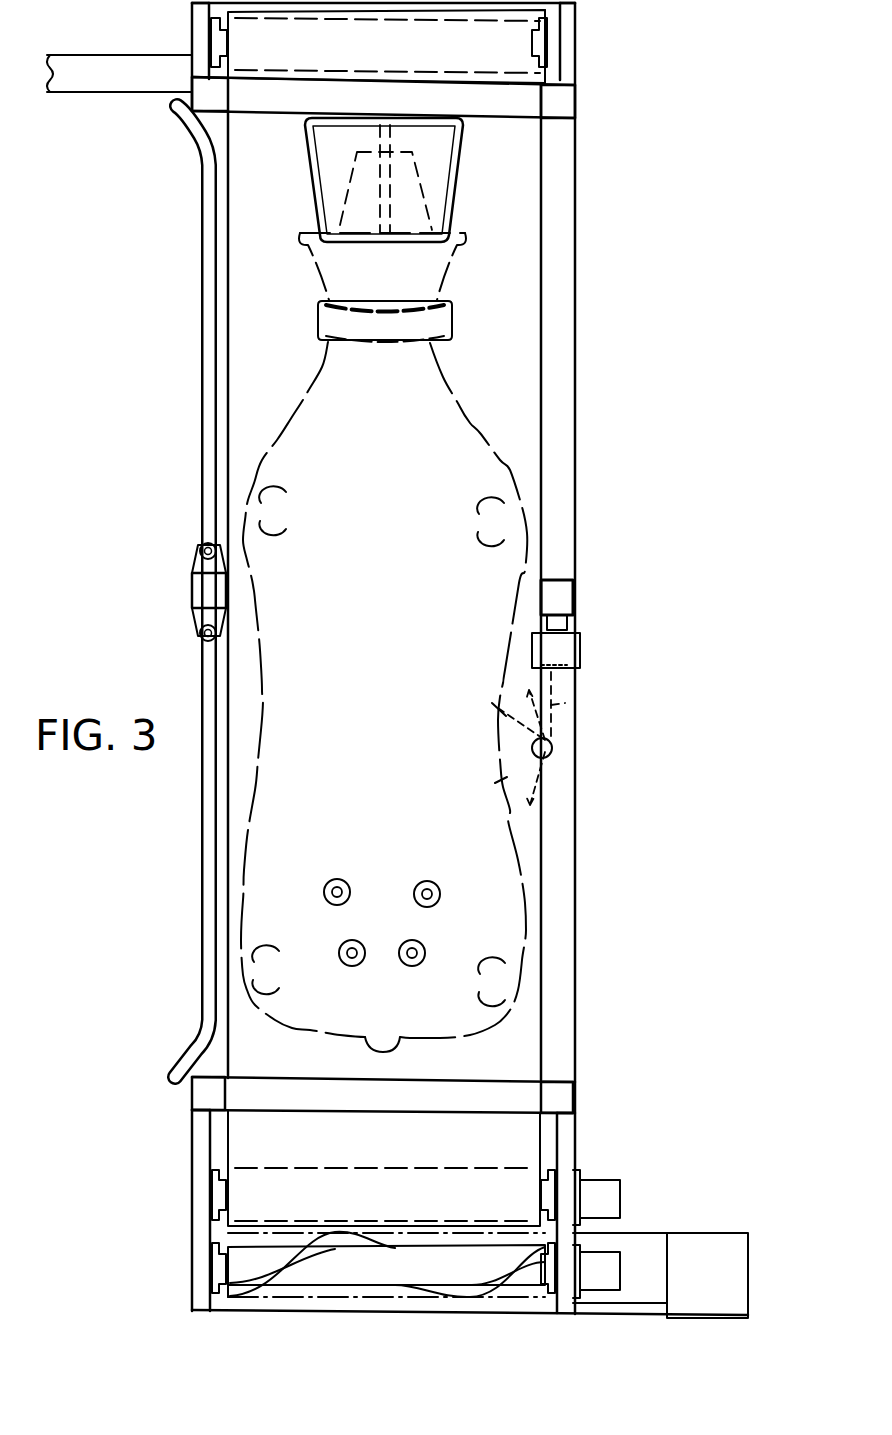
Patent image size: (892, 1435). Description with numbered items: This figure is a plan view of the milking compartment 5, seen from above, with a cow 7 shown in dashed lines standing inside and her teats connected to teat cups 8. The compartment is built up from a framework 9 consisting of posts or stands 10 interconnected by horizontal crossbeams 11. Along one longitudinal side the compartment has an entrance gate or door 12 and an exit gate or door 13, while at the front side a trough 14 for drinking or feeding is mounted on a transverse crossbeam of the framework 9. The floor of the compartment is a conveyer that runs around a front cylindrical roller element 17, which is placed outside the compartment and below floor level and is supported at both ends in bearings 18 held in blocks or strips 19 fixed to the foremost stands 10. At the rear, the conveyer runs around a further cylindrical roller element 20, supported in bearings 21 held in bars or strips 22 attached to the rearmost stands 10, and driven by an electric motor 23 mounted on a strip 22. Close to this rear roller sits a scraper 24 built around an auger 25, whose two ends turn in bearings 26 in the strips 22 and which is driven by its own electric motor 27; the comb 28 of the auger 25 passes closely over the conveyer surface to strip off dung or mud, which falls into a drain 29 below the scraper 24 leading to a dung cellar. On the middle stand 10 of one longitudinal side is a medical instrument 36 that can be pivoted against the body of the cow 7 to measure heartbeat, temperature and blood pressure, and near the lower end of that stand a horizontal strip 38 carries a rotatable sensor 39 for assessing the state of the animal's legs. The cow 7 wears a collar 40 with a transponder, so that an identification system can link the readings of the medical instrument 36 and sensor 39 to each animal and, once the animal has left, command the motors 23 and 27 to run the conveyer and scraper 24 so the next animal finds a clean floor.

The milking compartment 5 is at (384, 642).
The cow 7 is at (384, 697).
The teat cups 8 is at (398, 950).
The framework 9 is at (437, 659).
The posts or stands 10 is at (560, 102).
The horizontal crossbeams 11 is at (568, 368).
The entrance gate or door 12 is at (203, 887).
The exit gate or door 13 is at (201, 214).
The trough 14 is at (322, 152).
The cylindrical roller element 17 is at (326, 52).
The bearings 18 is at (212, 58).
The blocks or strips 19 is at (192, 25).
The further cylindrical roller element 20 is at (343, 1176).
The bearings 21 is at (212, 1182).
The bars or strips 22 is at (196, 1147).
The electric motor 23 is at (620, 1192).
The scraper 24 is at (275, 1241).
The auger 25 is at (387, 1264).
The bearings 26 is at (212, 1250).
The electric motor 27 is at (610, 1272).
The comb 28 is at (352, 1242).
The drain 29 is at (708, 1250).
The medical instrument 36 is at (582, 658).
The horizontal strip 38 is at (570, 710).
The sensor 39 is at (556, 748).
The collar 40 is at (392, 322).